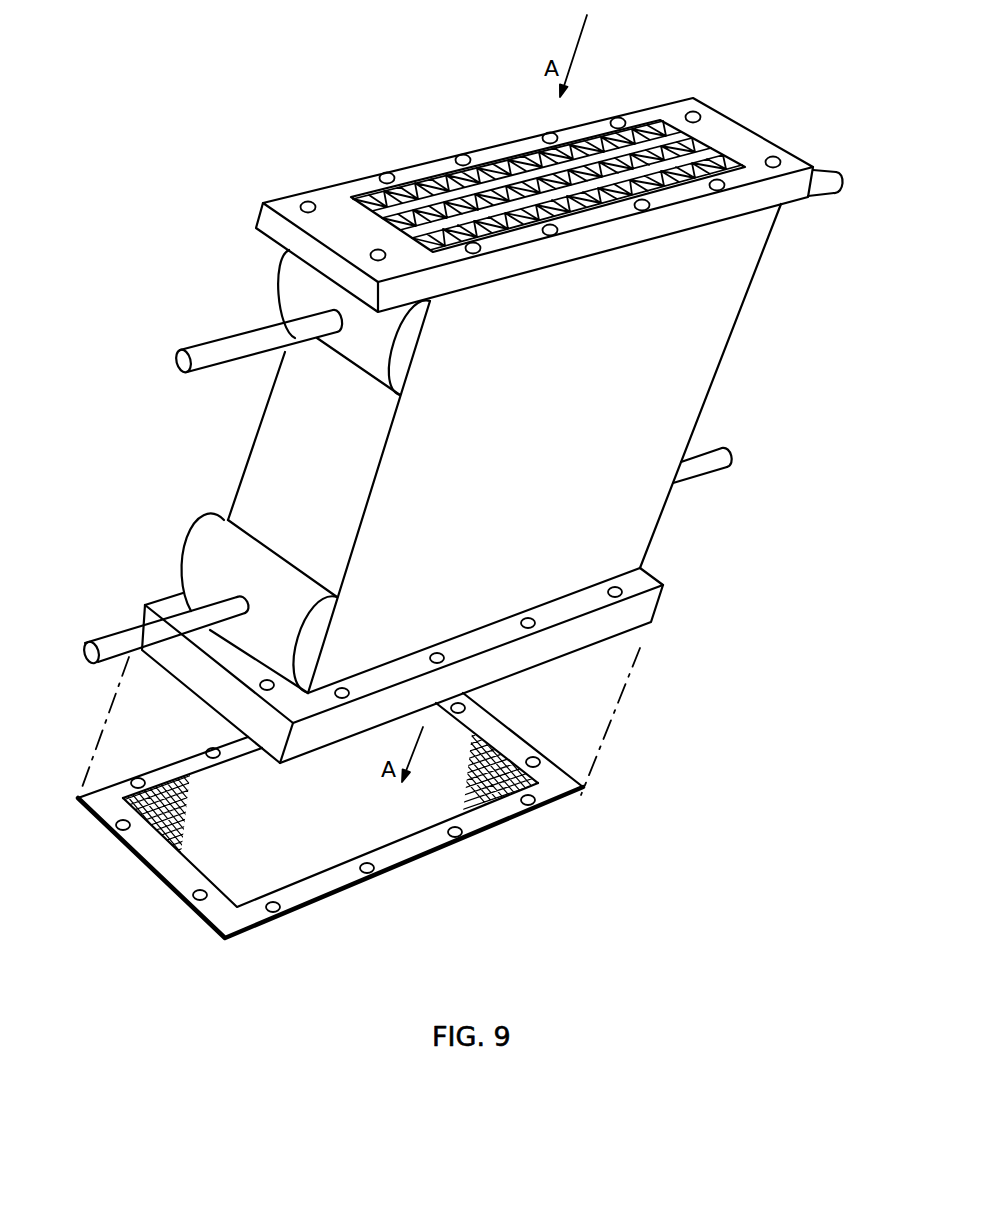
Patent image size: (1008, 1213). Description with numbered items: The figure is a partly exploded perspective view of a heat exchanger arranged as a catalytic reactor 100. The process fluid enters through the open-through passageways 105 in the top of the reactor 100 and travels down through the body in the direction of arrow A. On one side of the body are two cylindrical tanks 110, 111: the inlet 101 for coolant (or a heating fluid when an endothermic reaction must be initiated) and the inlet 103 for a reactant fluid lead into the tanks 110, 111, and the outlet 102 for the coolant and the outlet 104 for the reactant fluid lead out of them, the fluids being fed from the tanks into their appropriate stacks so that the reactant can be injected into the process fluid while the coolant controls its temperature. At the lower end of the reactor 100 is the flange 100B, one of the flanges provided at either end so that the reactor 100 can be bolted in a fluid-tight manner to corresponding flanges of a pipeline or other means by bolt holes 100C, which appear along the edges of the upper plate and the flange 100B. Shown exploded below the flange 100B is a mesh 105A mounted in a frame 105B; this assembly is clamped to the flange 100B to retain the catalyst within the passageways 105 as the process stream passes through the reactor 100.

The heat exchanger/catalytic reactor 100 is at (720, 385).
The flange 100B is at (577, 611).
The bolt holes 100C is at (387, 172).
The inlet 101 is at (157, 369).
The outlet 102 is at (792, 438).
The inlet 103 is at (878, 167).
The outlet 104 is at (84, 651).
The open-through passageways 105 is at (660, 128).
The mesh 105A is at (297, 857).
The frame 105B is at (492, 812).
The tank 110 is at (288, 305).
The tank 111 is at (200, 562).